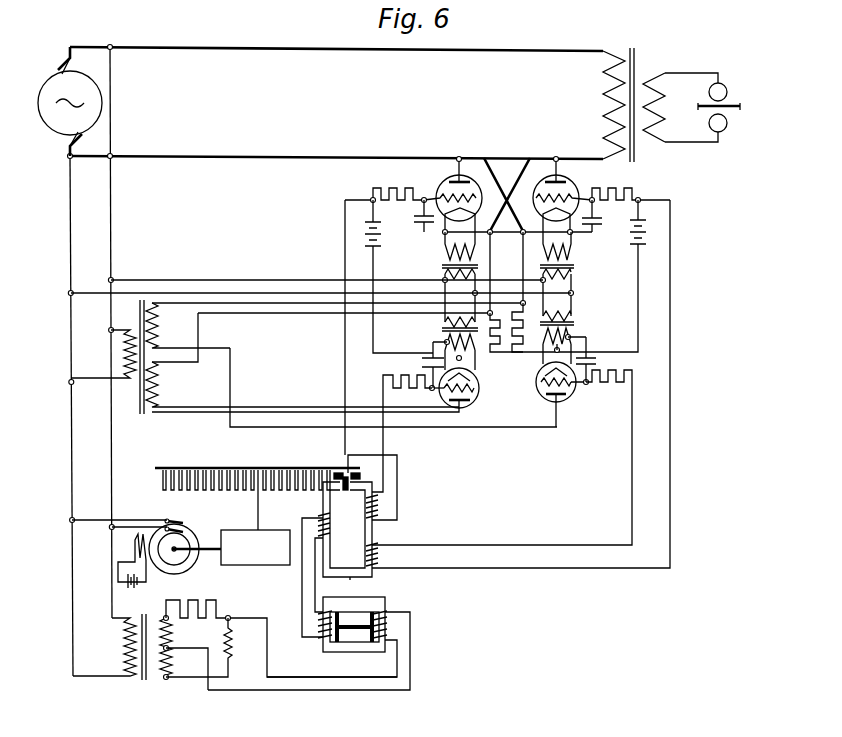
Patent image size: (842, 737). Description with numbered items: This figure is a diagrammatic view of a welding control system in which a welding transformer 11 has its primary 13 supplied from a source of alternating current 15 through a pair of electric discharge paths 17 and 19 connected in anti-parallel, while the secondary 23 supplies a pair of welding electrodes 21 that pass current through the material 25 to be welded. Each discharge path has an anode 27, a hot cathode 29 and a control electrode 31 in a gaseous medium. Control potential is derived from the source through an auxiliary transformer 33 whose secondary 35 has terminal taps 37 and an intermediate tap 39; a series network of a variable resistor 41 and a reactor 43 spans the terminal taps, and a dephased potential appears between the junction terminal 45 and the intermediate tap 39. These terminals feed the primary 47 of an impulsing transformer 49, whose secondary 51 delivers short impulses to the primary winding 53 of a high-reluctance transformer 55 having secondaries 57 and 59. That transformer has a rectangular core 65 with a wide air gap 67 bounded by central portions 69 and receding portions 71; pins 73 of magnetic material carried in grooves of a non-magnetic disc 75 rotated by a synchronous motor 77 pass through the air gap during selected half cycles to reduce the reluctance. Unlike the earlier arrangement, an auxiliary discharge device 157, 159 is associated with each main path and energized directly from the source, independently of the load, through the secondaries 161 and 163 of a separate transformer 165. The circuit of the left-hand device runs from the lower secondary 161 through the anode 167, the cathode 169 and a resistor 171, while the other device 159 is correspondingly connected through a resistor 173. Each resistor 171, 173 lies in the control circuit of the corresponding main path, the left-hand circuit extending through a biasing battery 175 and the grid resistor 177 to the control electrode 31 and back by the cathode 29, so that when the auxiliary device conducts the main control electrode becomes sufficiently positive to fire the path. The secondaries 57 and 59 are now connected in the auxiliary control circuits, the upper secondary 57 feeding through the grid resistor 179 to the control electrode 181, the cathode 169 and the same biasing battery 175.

The welding transformer 11 is at (643, 41).
The primary 13 is at (612, 50).
The source of alternating current 15 is at (94, 69).
The electric discharge path 17 is at (509, 180).
The electric discharge path 19 is at (546, 186).
The welding electrodes 21 is at (724, 100).
The secondary 23 is at (652, 73).
The material to be welded 25 is at (742, 114).
The anode 27 is at (462, 180).
The hot cathode 29 is at (507, 216).
The control electrode 31 is at (474, 196).
The auxiliary transformer 33 is at (151, 703).
The secondary 35 is at (166, 679).
The terminal taps 37 is at (170, 620).
The intermediate tap 39 is at (170, 647).
The variable resistor 41 is at (198, 604).
The reactor 43 is at (236, 652).
The junction terminal 45 is at (230, 616).
The primary 47 is at (389, 615).
The impulsing transformer 49 is at (364, 675).
The secondary 51 is at (326, 641).
The primary winding 53 is at (302, 518).
The transformer 55 is at (354, 534).
The secondary 57 is at (378, 506).
The secondary 59 is at (378, 556).
The rectangular core 65 is at (353, 577).
The air gap 67 is at (360, 480).
The central portions 69 is at (344, 478).
The receding portions 71 is at (336, 473).
The pins 73 is at (349, 470).
The non-magnetic disc 75 is at (221, 455).
The synchronous motor 77 is at (180, 514).
The auxiliary discharge device 157 is at (387, 389).
The auxiliary discharge device 159 is at (574, 392).
The secondary 161 is at (165, 383).
The secondary 163 is at (160, 326).
The transformer 165 is at (265, 357).
The anode 167 is at (462, 403).
The cathode 169 is at (468, 378).
The resistor 171 is at (495, 316).
The resistor 173 is at (516, 353).
The biasing battery 175 is at (382, 238).
The grid resistor 177 is at (376, 188).
The grid resistor 179 is at (388, 375).
The control electrode 181 is at (476, 389).